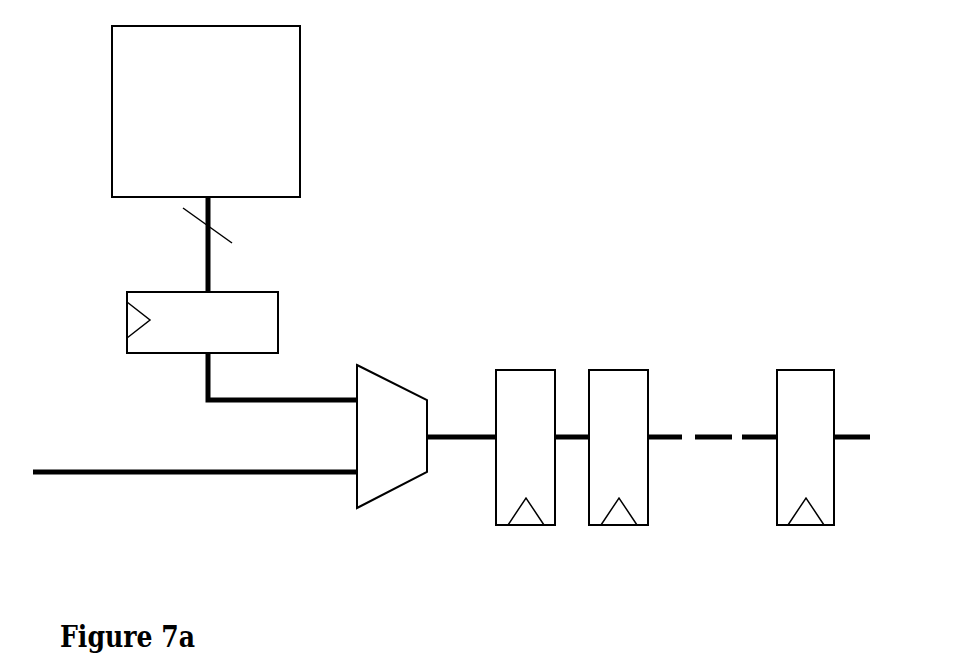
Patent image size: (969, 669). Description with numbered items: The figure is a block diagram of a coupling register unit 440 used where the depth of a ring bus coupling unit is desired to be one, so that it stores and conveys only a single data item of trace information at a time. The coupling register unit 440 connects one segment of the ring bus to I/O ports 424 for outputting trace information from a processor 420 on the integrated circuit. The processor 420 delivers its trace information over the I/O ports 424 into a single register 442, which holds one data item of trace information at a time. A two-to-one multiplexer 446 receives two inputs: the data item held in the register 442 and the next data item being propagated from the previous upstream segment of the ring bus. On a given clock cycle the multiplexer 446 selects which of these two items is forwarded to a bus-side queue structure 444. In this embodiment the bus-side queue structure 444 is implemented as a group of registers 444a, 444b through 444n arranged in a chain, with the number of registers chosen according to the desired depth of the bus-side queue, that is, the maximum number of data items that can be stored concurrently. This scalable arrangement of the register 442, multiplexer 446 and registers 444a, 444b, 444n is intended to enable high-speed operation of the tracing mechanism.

The processor 420 is at (183, 121).
The I/O ports 424 is at (203, 244).
The coupling register unit 440 is at (437, 225).
The register 442 is at (126, 320).
The bus-side queue structure 444 is at (663, 441).
The register 444a is at (526, 525).
The register 444b is at (619, 525).
The register 444n is at (806, 525).
The 2-to-1 multiplexer 446 is at (390, 490).